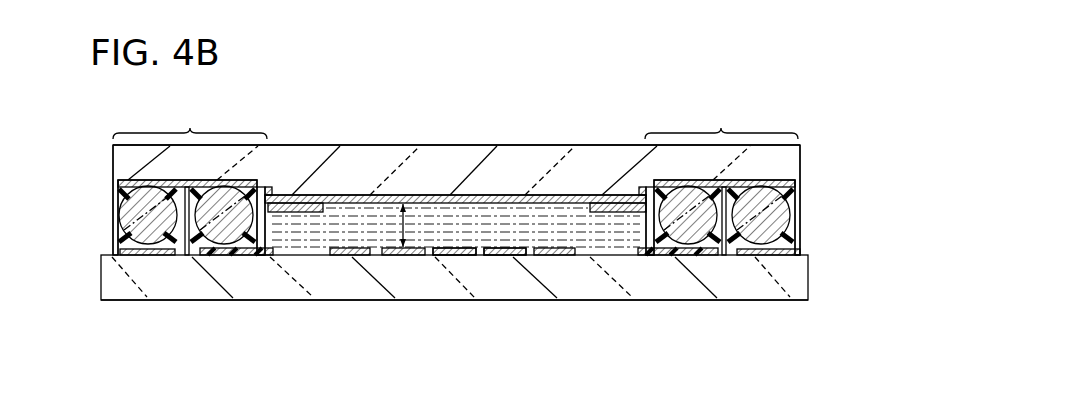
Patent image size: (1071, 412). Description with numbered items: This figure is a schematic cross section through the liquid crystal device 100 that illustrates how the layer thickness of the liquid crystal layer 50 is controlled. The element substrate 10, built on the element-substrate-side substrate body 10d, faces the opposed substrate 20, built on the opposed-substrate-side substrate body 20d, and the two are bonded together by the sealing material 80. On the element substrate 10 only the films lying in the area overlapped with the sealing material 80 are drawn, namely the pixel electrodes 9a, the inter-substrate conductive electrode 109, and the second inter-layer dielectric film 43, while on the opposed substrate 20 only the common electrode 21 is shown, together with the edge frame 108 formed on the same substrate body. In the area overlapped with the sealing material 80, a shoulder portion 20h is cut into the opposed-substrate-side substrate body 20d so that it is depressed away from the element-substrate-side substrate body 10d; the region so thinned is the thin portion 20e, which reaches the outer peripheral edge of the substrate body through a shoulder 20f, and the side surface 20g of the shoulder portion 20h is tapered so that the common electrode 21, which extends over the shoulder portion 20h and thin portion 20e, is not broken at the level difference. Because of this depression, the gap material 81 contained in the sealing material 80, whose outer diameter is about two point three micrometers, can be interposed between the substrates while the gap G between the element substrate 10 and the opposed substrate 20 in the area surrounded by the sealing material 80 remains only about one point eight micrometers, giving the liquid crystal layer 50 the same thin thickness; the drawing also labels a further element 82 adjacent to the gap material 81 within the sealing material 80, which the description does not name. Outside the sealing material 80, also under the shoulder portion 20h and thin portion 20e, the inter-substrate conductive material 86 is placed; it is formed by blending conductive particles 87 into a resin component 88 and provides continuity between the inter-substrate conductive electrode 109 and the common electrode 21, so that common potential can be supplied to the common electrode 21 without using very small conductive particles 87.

The liquid crystal device 100 is at (663, 92).
The opposed substrate 20 is at (392, 143).
The opposed-substrate-side substrate body 20d is at (790, 160).
The thin portion 20e is at (455, 123).
The shoulder 20f is at (117, 197).
The shoulder portion 20h is at (793, 198).
The side surface of the shoulder portion 20g is at (264, 215).
The common electrode 21 is at (477, 195).
The edge frame 108 is at (290, 205).
The gap G is at (405, 204).
The element substrate 10 is at (398, 304).
The element-substrate-side substrate body 10d is at (800, 268).
The pixel electrodes 9a is at (503, 257).
The liquid crystal layer 50 is at (530, 257).
The second inter-layer dielectric film 43 is at (258, 245).
The sealing material 80 is at (270, 357).
The gap material 81 is at (218, 237).
The holding portion 82 is at (246, 252).
The inter-substrate conductive material 86 is at (142, 357).
The conductive particles 87 is at (135, 230).
The resin component 88 is at (172, 237).
The inter-substrate conductive electrode 109 is at (170, 252).